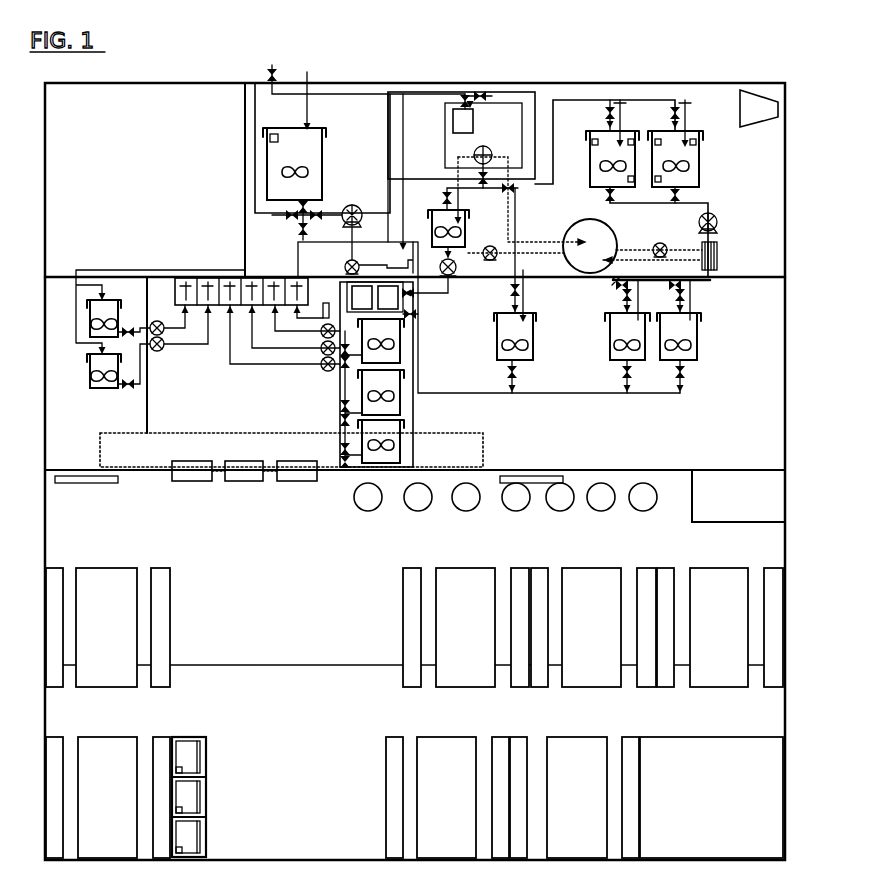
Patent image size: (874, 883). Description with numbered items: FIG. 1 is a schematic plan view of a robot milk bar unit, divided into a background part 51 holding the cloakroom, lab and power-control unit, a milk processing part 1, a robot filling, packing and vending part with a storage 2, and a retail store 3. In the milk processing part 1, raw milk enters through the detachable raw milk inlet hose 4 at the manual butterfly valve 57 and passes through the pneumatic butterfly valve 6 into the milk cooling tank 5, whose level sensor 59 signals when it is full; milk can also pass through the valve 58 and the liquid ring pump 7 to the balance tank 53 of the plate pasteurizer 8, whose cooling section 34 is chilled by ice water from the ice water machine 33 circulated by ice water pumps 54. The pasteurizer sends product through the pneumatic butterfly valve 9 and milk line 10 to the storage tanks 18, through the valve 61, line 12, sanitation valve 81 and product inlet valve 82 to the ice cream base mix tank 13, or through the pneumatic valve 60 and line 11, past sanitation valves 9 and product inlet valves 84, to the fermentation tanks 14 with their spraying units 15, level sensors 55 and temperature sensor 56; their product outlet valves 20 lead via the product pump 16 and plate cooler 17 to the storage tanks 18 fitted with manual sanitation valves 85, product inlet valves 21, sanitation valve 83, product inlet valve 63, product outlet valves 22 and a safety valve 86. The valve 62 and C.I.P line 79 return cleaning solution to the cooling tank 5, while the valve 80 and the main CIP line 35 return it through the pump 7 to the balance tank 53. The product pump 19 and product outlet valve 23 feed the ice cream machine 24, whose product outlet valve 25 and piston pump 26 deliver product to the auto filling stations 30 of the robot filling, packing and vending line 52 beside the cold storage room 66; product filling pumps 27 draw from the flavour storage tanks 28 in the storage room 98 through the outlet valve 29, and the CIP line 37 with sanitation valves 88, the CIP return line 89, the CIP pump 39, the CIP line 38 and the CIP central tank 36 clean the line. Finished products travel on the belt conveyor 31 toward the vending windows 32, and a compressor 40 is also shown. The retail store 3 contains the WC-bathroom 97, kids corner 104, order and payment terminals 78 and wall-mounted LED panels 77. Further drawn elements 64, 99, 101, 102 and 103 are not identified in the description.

The milk processing part 1 is at (785, 122).
The robot filling, packing and vending part with a storage 2 is at (785, 372).
The retail store 3 is at (785, 568).
The detachable raw milk inlet hose 4 is at (271, 86).
The milk cooling tank 5 is at (273, 133).
The pneumatic butterfly valve 6 is at (295, 214).
The liquid ring pump 7 is at (360, 208).
The plate pasteurizer 8 is at (464, 96).
The pneumatic butterfly valve 9 is at (520, 191).
The milk line 10 is at (515, 222).
The line 11 is at (578, 100).
The line 12 is at (470, 190).
The ice cream base mix tank 13 is at (437, 209).
The fermentation tanks 14 is at (665, 145).
The CIP spraying unit 15 is at (447, 192).
The product pump 16 is at (716, 215).
The plate cooler 17 is at (717, 250).
The storage tanks 18 is at (392, 397).
The product pump 19 is at (455, 273).
The product outlet valves 20 is at (676, 201).
The product inlet valves 21 is at (683, 288).
The product outlet valve 22 is at (385, 437).
The product outlet valve 23 is at (410, 297).
The ice cream machine 24 is at (412, 316).
The product outlet valve 25 is at (340, 282).
The piston pump 26 is at (325, 306).
The product filling pumps 27 is at (163, 350).
The flavour storage tanks 28 is at (95, 348).
The outlet valve 29 is at (95, 385).
The auto filling stations 30 is at (297, 278).
The belt conveyor 31 is at (322, 453).
The vending windows 32 is at (278, 482).
The ice water machine 33 is at (585, 219).
The cooling section 34 is at (480, 92).
The main CIP line 35 is at (388, 232).
The CIP central tank 36 is at (407, 140).
The CIP line 37 is at (430, 398).
The CIP line 38 is at (122, 270).
The CIP pump 39 is at (328, 128).
The compressor 40 is at (756, 89).
The background part 51 is at (135, 188).
The robot filling, packing and vending line 52 is at (205, 408).
The balance tank 53 is at (455, 115).
The ice water pumps 54 is at (492, 245).
The level sensors 55 is at (696, 143).
The temperature sensor 56 is at (628, 140).
The manual butterfly valve 57 is at (298, 262).
The pneumatic butterfly valve 58 is at (311, 89).
The level sensor 59 is at (265, 128).
The pneumatic valve 60 is at (523, 183).
The pneumatic butterfly valve 61 is at (470, 100).
The pneumatic butterfly valve 62 is at (463, 207).
The product inlet valve 63 is at (524, 322).
The distribution pipes 64 is at (297, 320).
The cold storage room 66 is at (527, 458).
The LED panels 77 is at (503, 487).
The order & payment terminals 78 is at (208, 760).
The C.I.P line 79 is at (358, 92).
The valve 80 is at (306, 204).
The sanitation valve 81 is at (458, 165).
The product inlet valve 82 is at (402, 130).
The sanitation valve 83 is at (520, 280).
The product inlet valves 84 is at (678, 120).
The manual sanitation valves 85 is at (690, 300).
The safety valve 86 is at (652, 325).
The sanitation valves 88 is at (345, 452).
The CIP return line 89 is at (345, 266).
The WC-bathroom 97 is at (724, 507).
The storage room 98 is at (75, 418).
The supply lines 99 is at (587, 748).
The module 101 is at (187, 832).
The sensor 102 is at (180, 850).
The housing 103 is at (198, 835).
The kids corner 104 is at (705, 805).